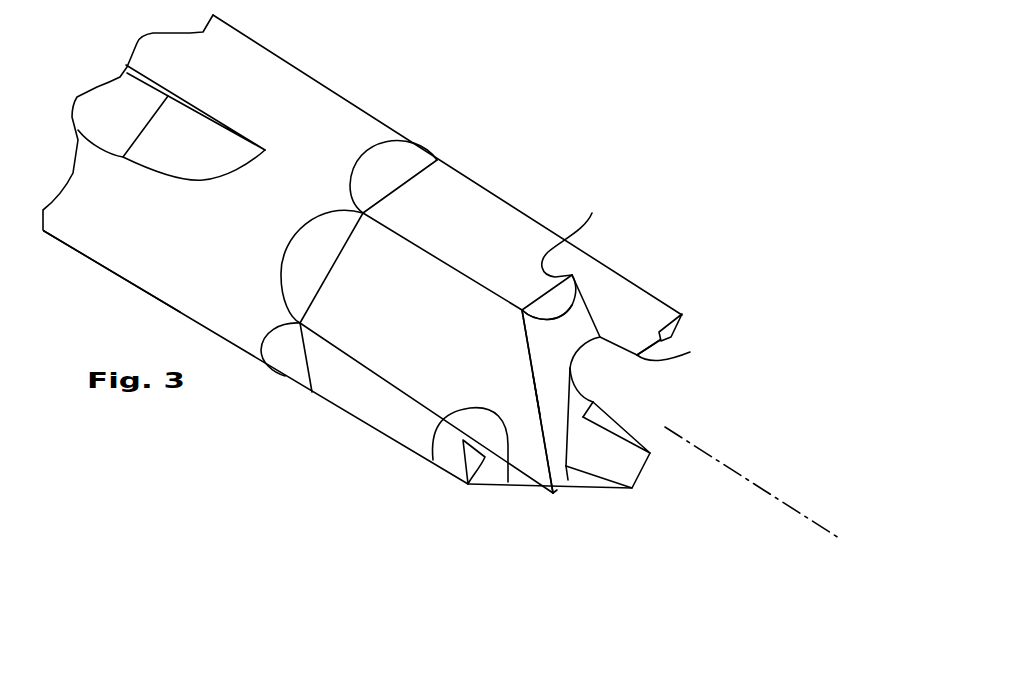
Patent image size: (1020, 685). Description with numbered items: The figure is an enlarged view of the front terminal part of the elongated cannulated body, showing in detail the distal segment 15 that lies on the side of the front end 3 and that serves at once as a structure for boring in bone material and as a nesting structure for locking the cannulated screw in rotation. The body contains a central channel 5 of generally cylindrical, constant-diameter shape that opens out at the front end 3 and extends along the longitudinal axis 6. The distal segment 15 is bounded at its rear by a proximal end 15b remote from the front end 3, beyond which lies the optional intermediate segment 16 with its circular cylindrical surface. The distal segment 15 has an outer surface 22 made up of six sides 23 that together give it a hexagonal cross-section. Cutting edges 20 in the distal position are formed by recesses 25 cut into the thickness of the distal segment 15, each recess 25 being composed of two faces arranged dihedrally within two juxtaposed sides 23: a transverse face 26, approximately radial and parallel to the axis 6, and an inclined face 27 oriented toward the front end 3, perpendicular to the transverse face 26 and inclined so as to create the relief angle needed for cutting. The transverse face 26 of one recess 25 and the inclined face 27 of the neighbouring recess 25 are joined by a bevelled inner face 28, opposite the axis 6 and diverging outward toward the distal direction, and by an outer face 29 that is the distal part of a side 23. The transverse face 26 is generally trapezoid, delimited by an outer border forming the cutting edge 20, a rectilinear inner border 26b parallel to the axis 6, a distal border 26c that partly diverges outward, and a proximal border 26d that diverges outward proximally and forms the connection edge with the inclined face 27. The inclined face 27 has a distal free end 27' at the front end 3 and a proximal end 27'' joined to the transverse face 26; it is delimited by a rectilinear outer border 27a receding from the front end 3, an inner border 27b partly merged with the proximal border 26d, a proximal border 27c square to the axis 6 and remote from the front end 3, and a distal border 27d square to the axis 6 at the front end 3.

The front end 3 is at (571, 505).
The central channel 5 is at (602, 358).
The longitudinal axis 6 is at (757, 484).
The distal segment 15 is at (551, 210).
The proximal end 15b is at (392, 108).
The intermediate segment 16 is at (135, 291).
The cutting edge 20 is at (628, 310).
The outer surface 22 is at (465, 158).
The side 23 is at (478, 217).
The recess 25 is at (616, 385).
The transverse face 26 is at (617, 320).
The rectilinear inner border 26b is at (633, 347).
The distal border 26c is at (645, 352).
The proximal border 26d is at (545, 323).
The inclined face 27 is at (558, 540).
The rectilinear outer border 27a is at (527, 394).
The inner border 27b is at (603, 418).
The proximal border 27c is at (578, 232).
The distal border 27d is at (557, 492).
The distal free end 27' is at (665, 427).
The proximal end 27'' is at (488, 362).
The bevelled inner face 28 is at (650, 455).
The outer face 29 is at (610, 285).